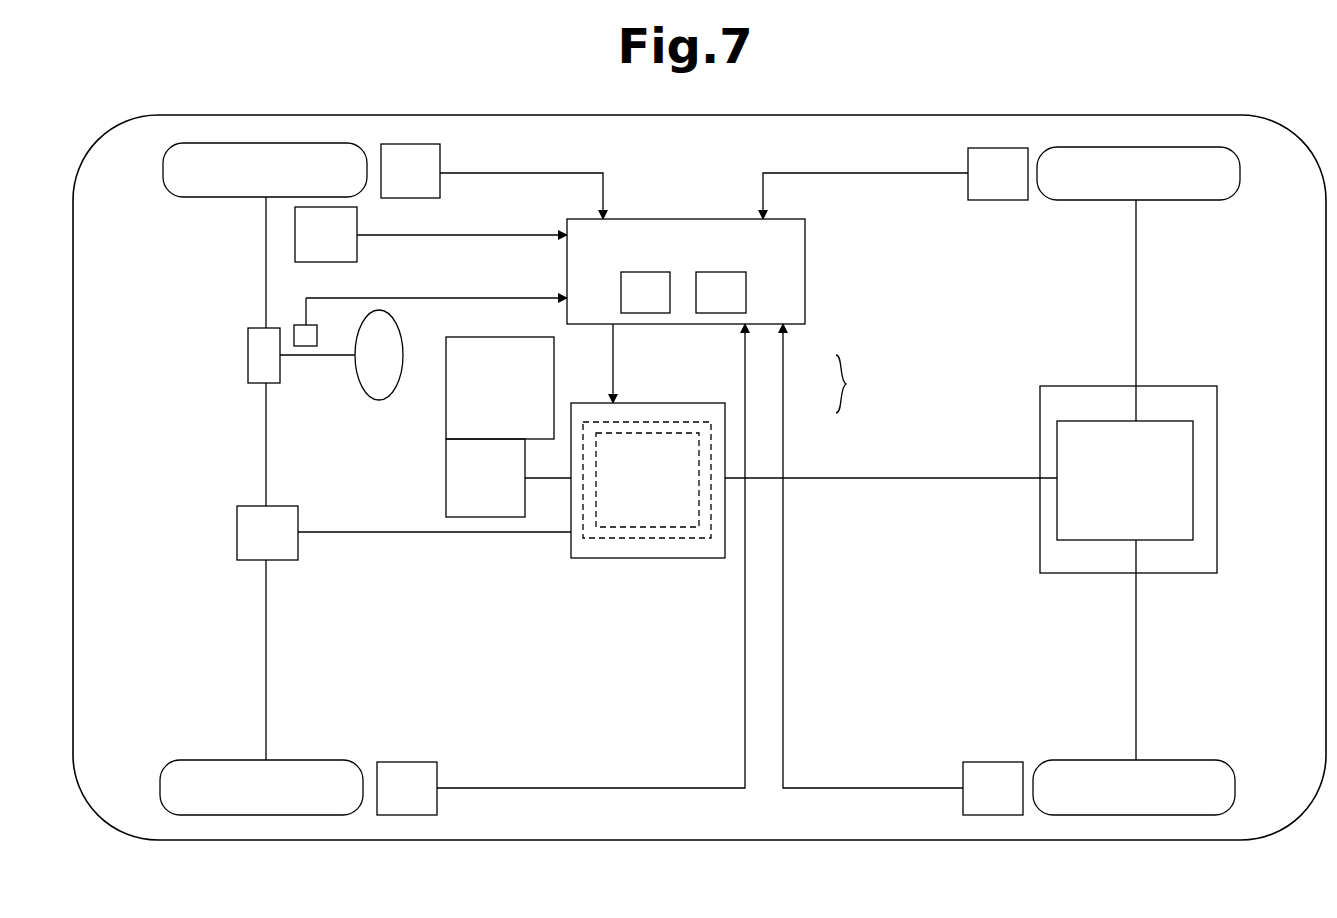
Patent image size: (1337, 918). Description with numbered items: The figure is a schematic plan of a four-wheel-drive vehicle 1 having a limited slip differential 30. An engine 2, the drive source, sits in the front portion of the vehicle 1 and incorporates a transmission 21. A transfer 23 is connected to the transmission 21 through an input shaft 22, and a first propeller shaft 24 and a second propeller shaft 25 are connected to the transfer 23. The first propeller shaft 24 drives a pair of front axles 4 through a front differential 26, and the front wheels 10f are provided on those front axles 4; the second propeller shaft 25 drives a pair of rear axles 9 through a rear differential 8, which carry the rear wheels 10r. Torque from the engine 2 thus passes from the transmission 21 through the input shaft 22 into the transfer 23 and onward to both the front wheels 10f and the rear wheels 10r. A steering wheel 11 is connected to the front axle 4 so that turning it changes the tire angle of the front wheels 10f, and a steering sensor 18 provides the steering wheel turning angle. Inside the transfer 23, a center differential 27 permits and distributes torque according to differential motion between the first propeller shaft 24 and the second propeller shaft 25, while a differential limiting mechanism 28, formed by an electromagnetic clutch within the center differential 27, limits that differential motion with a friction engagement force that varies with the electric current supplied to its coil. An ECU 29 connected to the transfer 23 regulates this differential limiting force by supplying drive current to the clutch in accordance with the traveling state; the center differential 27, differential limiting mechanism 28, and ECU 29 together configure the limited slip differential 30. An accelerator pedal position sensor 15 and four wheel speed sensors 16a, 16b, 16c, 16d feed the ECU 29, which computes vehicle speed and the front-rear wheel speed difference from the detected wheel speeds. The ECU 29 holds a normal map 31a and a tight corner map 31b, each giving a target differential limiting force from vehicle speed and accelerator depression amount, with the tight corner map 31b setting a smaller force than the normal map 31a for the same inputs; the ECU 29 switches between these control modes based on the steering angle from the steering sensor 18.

The vehicle 1 is at (1297, 138).
The engine 2 is at (446, 406).
The front axles 4 is at (266, 418).
The rear differential 8 is at (1193, 478).
The rear axles 9 is at (1136, 302).
The front wheels 10f is at (262, 143).
The rear wheels 10r is at (1140, 147).
The steering wheel 11 is at (365, 398).
The accelerator pedal position sensor 15 is at (295, 237).
The wheel speed sensor 16a is at (407, 144).
The wheel speed sensor 16b is at (403, 762).
The wheel speed sensor 16c is at (995, 148).
The wheel speed sensor 16d is at (992, 762).
The steering sensor 18 is at (306, 356).
The transmission 21 is at (446, 503).
The input shaft 22 is at (547, 480).
The transfer 23 is at (725, 418).
The first propeller shaft 24 is at (435, 534).
The second propeller shaft 25 is at (889, 480).
The front differential 26 is at (237, 531).
The center differential 27 is at (606, 540).
The differential limiting mechanism 28 is at (664, 529).
The ECU 29 is at (798, 326).
The limited slip differential 30 is at (859, 384).
The normal map 31a is at (621, 290).
The tight corner map 31b is at (746, 290).